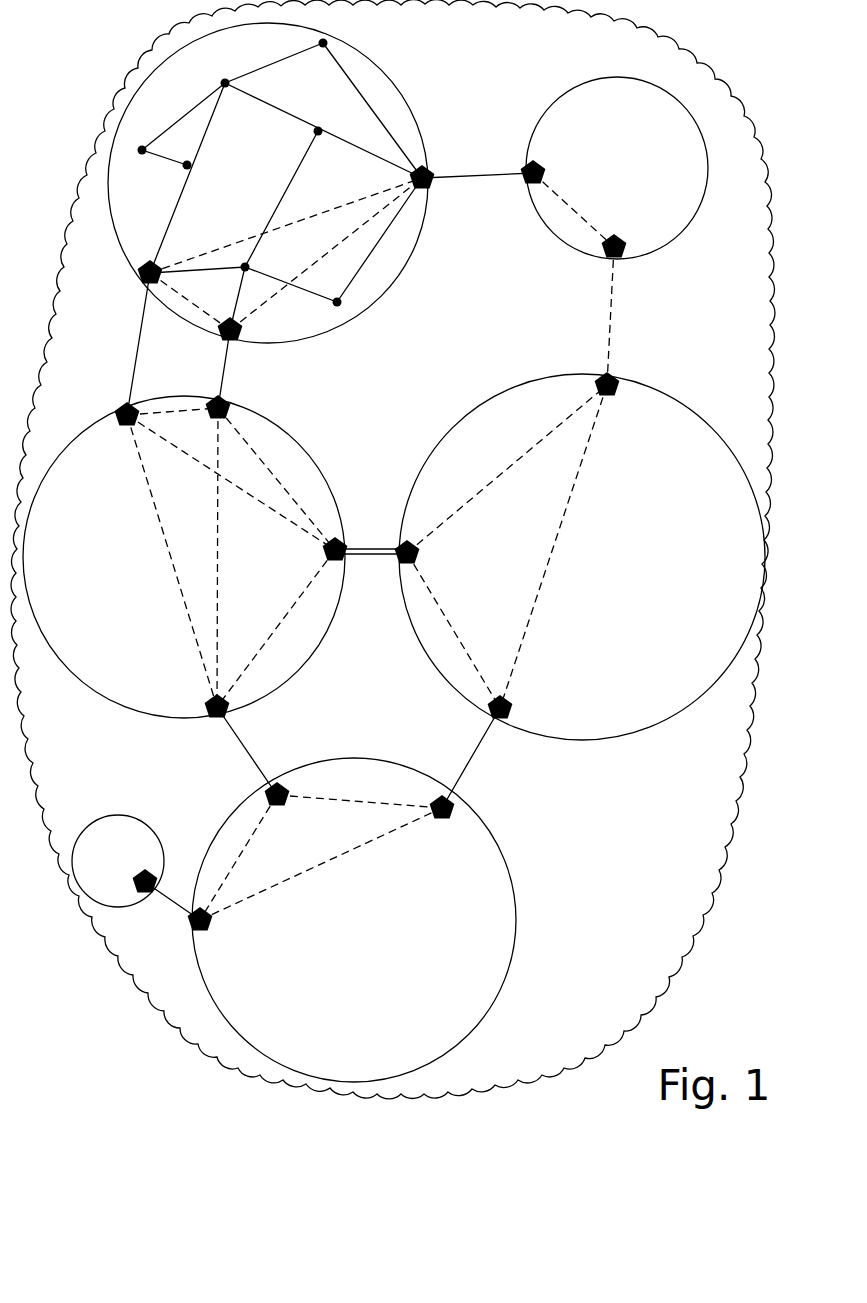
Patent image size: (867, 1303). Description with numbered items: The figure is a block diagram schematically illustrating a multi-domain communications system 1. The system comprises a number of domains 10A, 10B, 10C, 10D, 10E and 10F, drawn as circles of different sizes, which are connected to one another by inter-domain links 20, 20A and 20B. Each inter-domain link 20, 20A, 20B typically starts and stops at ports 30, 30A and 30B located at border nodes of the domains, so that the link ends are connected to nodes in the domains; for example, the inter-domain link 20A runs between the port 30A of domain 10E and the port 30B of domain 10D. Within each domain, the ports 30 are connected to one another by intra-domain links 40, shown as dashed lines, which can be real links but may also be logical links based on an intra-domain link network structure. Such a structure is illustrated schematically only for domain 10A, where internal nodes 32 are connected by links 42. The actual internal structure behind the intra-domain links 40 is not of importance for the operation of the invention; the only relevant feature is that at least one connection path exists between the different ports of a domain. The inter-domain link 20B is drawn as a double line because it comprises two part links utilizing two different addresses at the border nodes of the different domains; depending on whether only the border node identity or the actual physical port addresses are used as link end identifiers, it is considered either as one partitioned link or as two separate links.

The multi-domain communications system 1 is at (643, 950).
The domain 10A is at (293, 337).
The domain 10B is at (147, 702).
The domain 10C is at (503, 915).
The domain 10D is at (637, 732).
The domain 10E is at (685, 223).
The domain 10F is at (93, 828).
The inter-domain link 20 is at (475, 180).
The inter-domain link 20A is at (612, 310).
The inter-domain link 20B is at (377, 558).
The port 30 is at (147, 263).
The port 30A is at (615, 235).
The port 30B is at (603, 367).
The internal node 32 is at (220, 85).
The intra-domain link 40 is at (248, 240).
The link 42 is at (277, 65).